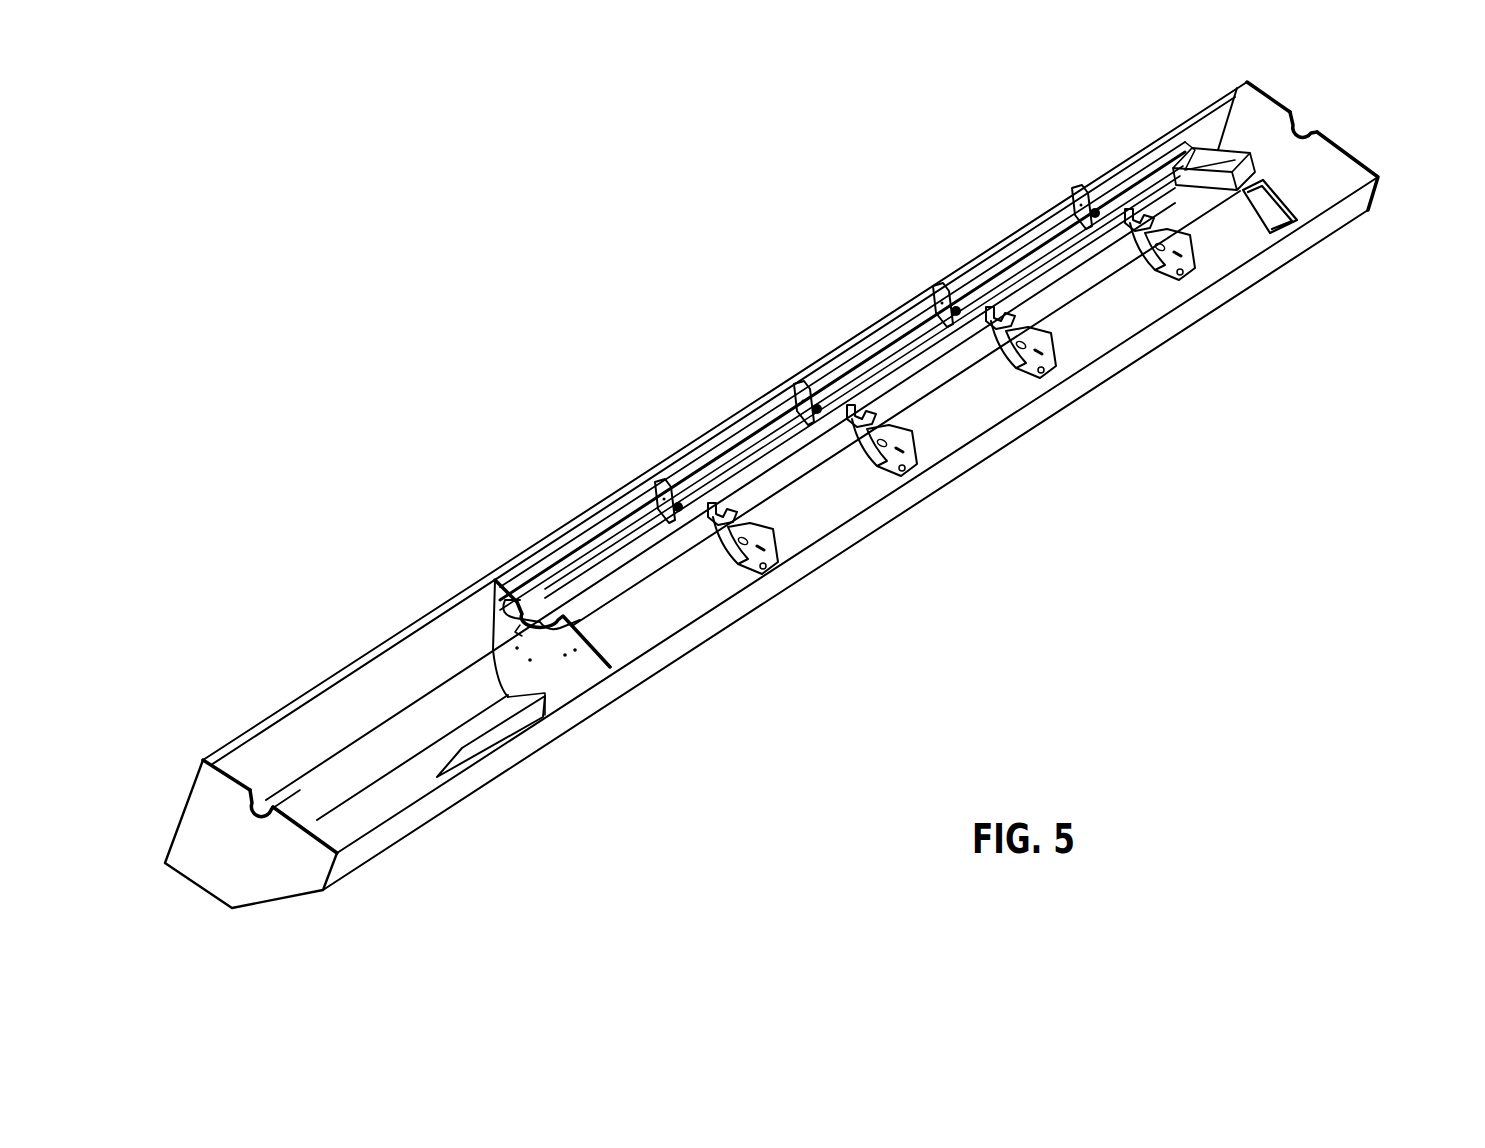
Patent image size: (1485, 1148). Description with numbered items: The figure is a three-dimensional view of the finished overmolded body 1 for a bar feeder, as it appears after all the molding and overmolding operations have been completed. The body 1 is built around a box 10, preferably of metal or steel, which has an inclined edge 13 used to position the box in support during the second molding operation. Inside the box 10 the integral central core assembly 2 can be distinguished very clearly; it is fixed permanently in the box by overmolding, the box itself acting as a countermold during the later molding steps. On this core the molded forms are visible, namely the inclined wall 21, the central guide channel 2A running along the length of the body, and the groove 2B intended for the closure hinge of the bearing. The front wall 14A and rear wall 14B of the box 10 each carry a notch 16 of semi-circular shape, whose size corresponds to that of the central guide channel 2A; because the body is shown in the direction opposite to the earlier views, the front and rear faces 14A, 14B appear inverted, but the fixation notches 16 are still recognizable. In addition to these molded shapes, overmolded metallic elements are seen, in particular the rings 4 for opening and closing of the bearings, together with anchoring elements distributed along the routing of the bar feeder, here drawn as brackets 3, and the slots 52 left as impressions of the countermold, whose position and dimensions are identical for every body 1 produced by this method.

The body 1 is at (478, 463).
The integral central core assembly 2 is at (584, 530).
The central guide channel 2A is at (549, 613).
The groove 2B is at (561, 576).
The mounting bracket 3 is at (793, 551).
The rings 4 is at (665, 481).
The box 10 is at (655, 752).
The inclined edge 13 is at (287, 891).
The front wall 14A is at (1340, 174).
The rear wall 14B is at (243, 880).
The notches 16 is at (263, 795).
The inclined wall 21 is at (665, 603).
The slots 52 is at (732, 503).